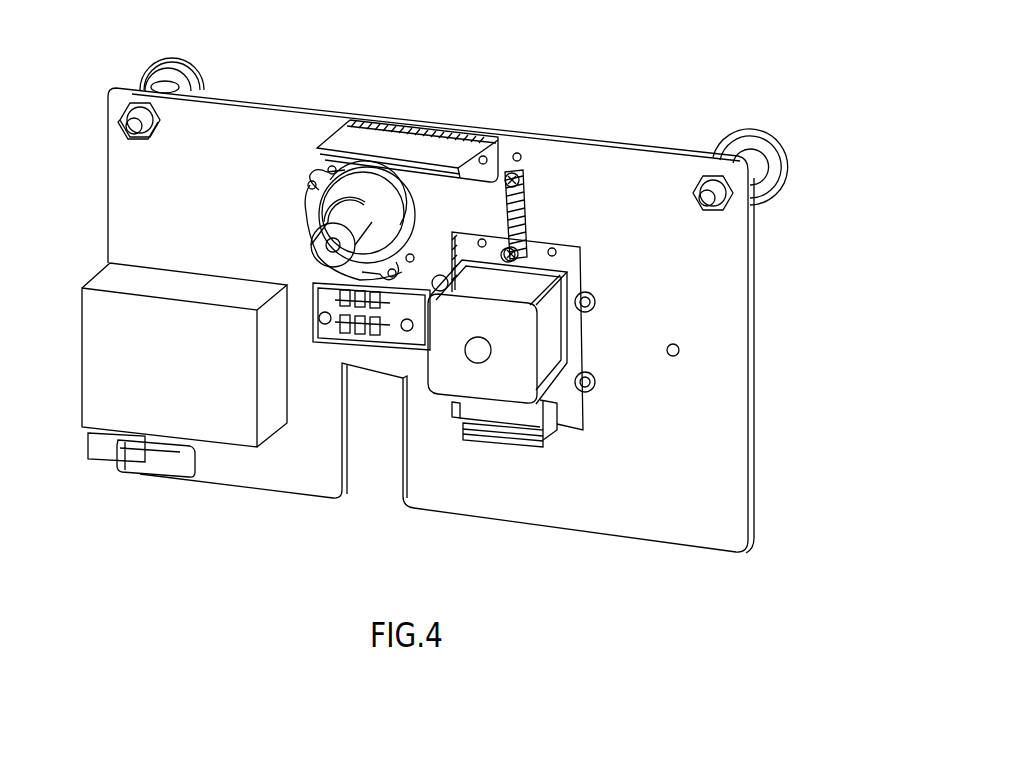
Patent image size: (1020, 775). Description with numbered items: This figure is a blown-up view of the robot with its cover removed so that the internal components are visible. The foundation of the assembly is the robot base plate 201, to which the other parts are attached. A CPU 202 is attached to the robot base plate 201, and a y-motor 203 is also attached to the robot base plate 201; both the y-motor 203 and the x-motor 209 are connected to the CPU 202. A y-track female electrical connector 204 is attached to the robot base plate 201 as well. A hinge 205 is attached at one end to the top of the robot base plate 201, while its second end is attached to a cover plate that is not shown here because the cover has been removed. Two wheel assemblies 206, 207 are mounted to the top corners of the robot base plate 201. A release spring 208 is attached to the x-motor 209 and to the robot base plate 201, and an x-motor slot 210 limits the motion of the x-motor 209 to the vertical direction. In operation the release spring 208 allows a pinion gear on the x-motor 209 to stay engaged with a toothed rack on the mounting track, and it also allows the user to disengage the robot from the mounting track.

The robot base plate 201 is at (225, 118).
The CPU 202 is at (157, 340).
The y-motor 203 is at (387, 187).
The y-track female electrical connector 204 is at (318, 330).
The hinge 205 is at (455, 137).
The wheel assembly 206 is at (155, 60).
The wheel assembly 207 is at (762, 160).
The release spring 208 is at (535, 210).
The x-motor 209 is at (550, 347).
The x-motor slot 210 is at (577, 417).